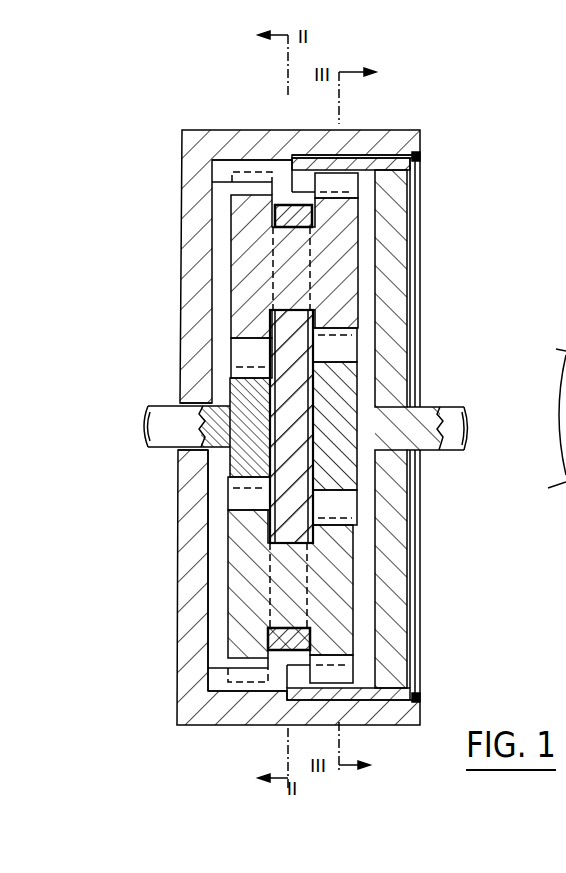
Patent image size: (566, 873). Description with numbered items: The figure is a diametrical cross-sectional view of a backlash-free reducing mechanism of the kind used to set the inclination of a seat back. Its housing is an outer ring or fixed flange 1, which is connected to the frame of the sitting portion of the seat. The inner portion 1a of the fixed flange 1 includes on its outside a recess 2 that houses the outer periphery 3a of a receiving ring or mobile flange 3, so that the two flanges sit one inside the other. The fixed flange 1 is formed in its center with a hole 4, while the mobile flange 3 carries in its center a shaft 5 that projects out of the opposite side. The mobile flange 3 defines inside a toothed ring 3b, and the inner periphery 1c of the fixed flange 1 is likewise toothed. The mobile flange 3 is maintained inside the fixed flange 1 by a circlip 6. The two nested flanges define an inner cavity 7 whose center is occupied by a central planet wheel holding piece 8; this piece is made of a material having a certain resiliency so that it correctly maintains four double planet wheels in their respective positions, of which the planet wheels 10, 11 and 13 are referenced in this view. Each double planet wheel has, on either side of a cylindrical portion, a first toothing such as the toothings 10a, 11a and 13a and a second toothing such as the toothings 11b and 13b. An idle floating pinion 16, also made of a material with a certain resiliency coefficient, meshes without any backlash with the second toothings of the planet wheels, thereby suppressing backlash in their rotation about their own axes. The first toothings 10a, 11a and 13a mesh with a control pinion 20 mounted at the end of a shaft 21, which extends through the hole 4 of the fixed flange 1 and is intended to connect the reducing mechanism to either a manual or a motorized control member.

The fixed flange 1 is at (188, 125).
The inner portion of the fixed flange 1a is at (354, 146).
The inner periphery of the fixed flange 1c is at (232, 166).
The recess 2 is at (386, 160).
The mobile flange 3 is at (396, 268).
The outer periphery of the mobile flange 3a is at (410, 167).
The toothed ring 3b is at (368, 676).
The hole 4 is at (195, 392).
The shaft 5 is at (450, 413).
The circlip 6 is at (416, 695).
The inner cavity 7 is at (218, 625).
The central planet wheel holding piece 8 is at (287, 365).
The double planet wheel 10 is at (543, 492).
The toothing 10a is at (544, 347).
The double planet wheel 11 is at (240, 283).
The toothing 11a is at (240, 189).
The toothing 11b is at (358, 193).
The double planet wheel 13 is at (240, 574).
The toothing 13a is at (238, 665).
The toothing 13b is at (340, 674).
The idle floating pinion 16 is at (343, 468).
The control pinion 20 is at (242, 466).
The shaft 21 is at (172, 432).